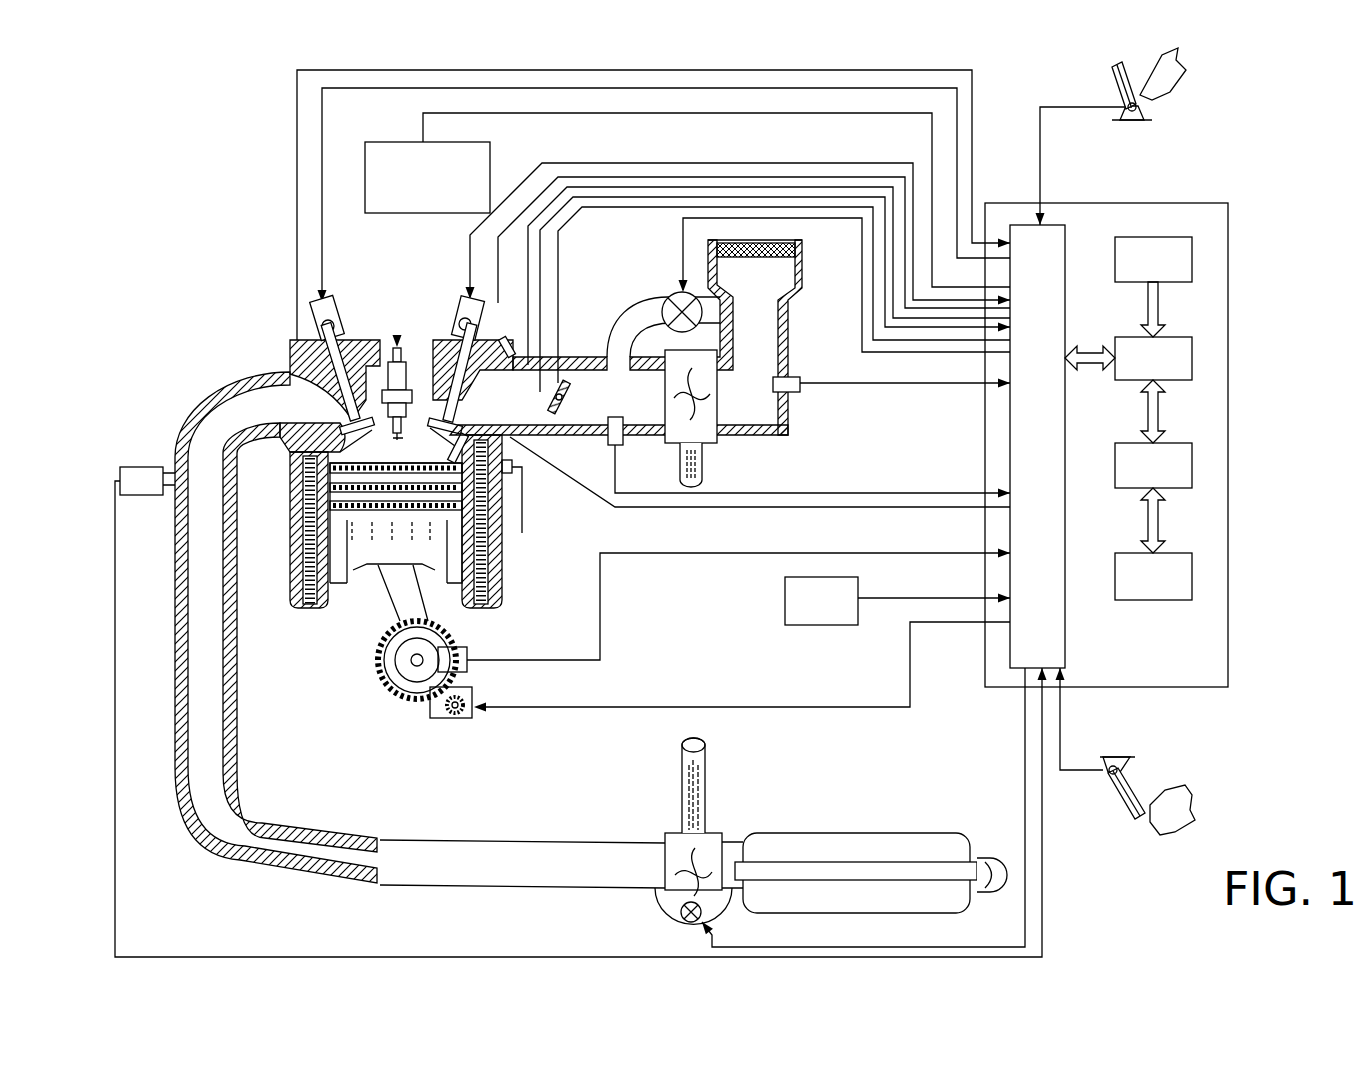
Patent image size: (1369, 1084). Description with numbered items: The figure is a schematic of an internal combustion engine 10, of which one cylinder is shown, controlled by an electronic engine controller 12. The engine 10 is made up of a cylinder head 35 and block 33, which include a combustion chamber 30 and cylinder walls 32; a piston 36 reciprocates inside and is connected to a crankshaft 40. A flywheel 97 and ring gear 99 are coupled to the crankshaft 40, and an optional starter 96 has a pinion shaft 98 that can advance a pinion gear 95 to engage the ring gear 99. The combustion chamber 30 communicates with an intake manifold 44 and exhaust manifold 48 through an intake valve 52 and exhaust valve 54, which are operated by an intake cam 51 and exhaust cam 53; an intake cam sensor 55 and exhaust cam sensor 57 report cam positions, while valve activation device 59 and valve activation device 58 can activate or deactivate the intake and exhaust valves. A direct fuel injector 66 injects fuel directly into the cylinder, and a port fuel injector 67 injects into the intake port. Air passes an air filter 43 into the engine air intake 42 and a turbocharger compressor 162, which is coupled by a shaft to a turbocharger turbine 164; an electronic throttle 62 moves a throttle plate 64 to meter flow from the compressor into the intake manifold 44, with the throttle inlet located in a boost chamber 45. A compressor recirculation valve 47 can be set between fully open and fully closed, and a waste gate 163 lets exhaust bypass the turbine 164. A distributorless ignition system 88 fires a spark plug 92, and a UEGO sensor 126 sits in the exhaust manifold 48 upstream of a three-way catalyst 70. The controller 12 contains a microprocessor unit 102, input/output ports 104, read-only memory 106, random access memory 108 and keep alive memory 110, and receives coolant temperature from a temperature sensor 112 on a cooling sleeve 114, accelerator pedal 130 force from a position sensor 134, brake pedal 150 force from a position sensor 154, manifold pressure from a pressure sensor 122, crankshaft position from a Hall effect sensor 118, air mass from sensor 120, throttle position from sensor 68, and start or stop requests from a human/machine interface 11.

The internal combustion engine 10 is at (222, 290).
The human/machine interface 11 is at (821, 601).
The electronic engine controller 12 is at (1154, 428).
The combustion chamber 30 is at (306, 543).
The cylinder walls 32 is at (330, 595).
The block 33 is at (371, 554).
The cylinder head 35 is at (298, 337).
The piston 36 is at (378, 552).
The crankshaft 40 is at (405, 690).
The engine air intake 42 is at (685, 331).
The air filter 43 is at (772, 258).
The intake manifold 44 is at (507, 408).
The boost chamber 45 is at (615, 411).
The compressor recirculation valve 47 is at (672, 296).
The exhaust manifold 48 is at (244, 417).
The intake cam 51 is at (453, 300).
The intake valve 52 is at (447, 402).
The exhaust cam 53 is at (326, 302).
The exhaust valve 54 is at (452, 378).
The intake cam sensor 55 is at (475, 288).
The exhaust cam sensor 57 is at (316, 299).
The valve activation device 58 is at (334, 326).
The valve activation device 59 is at (460, 326).
The electronic throttle 62 is at (564, 398).
The throttle plate 64 is at (562, 410).
The direct fuel injector 66 is at (510, 474).
The port fuel injector 67 is at (510, 352).
The throttle position sensor 68 is at (557, 372).
The three-way catalyst 70 is at (788, 832).
The distributorless ignition system 88 is at (490, 150).
The spark plug 92 is at (400, 345).
The pinion gear 95 is at (458, 714).
The starter 96 is at (448, 726).
The flywheel 97 is at (392, 655).
The pinion shaft 98 is at (437, 705).
The ring gear 99 is at (422, 700).
The microprocessor unit 102 is at (1192, 360).
The input/output ports 104 is at (1065, 245).
The read-only memory 106 is at (1192, 260).
The random access memory 108 is at (1192, 466).
The keep alive memory 110 is at (1192, 576).
The temperature sensor 112 is at (536, 500).
The cooling sleeve 114 is at (492, 572).
The Hall effect sensor 118 is at (467, 650).
The air mass sensor 120 is at (790, 378).
The pressure sensor 122 is at (609, 447).
The Universal Exhaust Gas Oxygen sensor 126 is at (120, 470).
The accelerator pedal 130 is at (1171, 91).
The position sensor 134 is at (1150, 107).
The brake pedal 150 is at (1105, 785).
The position sensor 154 is at (1105, 768).
The turbocharger compressor 162 is at (707, 432).
The waste gate 163 is at (686, 920).
The turbocharger turbine 164 is at (672, 832).